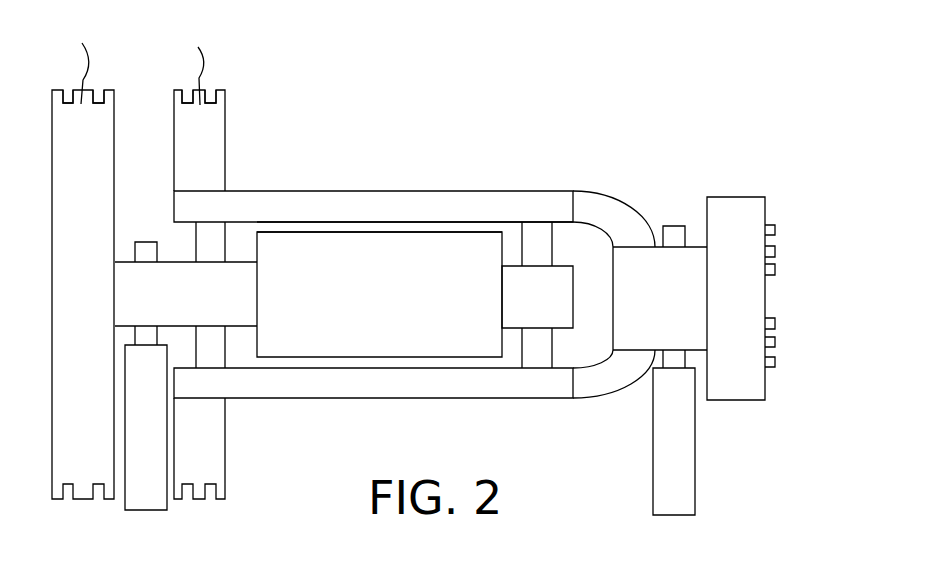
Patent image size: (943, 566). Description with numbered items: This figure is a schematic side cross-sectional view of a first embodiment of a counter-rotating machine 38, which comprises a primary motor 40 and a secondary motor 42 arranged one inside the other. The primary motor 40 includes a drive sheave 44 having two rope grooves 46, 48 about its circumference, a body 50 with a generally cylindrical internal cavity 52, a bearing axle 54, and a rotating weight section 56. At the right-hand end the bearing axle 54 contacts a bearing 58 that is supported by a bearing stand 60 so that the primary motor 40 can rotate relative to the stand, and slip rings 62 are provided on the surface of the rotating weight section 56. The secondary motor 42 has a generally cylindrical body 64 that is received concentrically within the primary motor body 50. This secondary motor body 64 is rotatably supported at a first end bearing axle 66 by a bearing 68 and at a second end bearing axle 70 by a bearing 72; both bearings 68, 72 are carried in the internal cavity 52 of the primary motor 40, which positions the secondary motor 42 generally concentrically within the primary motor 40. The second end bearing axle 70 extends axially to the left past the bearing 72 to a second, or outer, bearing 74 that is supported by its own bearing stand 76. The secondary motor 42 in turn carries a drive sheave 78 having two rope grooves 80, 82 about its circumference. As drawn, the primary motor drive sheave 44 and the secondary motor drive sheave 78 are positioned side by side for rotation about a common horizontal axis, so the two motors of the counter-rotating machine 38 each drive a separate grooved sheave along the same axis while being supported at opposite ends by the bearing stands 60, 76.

The counter-rotating machine 38 is at (428, 157).
The primary motor 40 is at (281, 184).
The secondary motor 42 is at (454, 216).
The drive sheave 44 is at (225, 447).
The rope groove 46 is at (185, 90).
The rope groove 48 is at (210, 90).
The body 50 is at (398, 400).
The internal cavity 52 is at (580, 245).
The bearing axle 54 is at (630, 262).
The rotating weight section 56 is at (738, 195).
The bearing 58 is at (667, 226).
The bearing stand 60 is at (652, 403).
The slip rings 62 is at (775, 252).
The body 64 is at (333, 232).
The first end bearing axle 66 is at (558, 310).
The bearing 68 is at (537, 241).
The second end bearing axle 70 is at (173, 278).
The bearing 72 is at (208, 242).
The outer bearing 74 is at (133, 255).
The bearing stand 76 is at (145, 440).
The drive sheave 78 is at (98, 158).
The rope groove 80 is at (68, 88).
The rope groove 82 is at (99, 89).